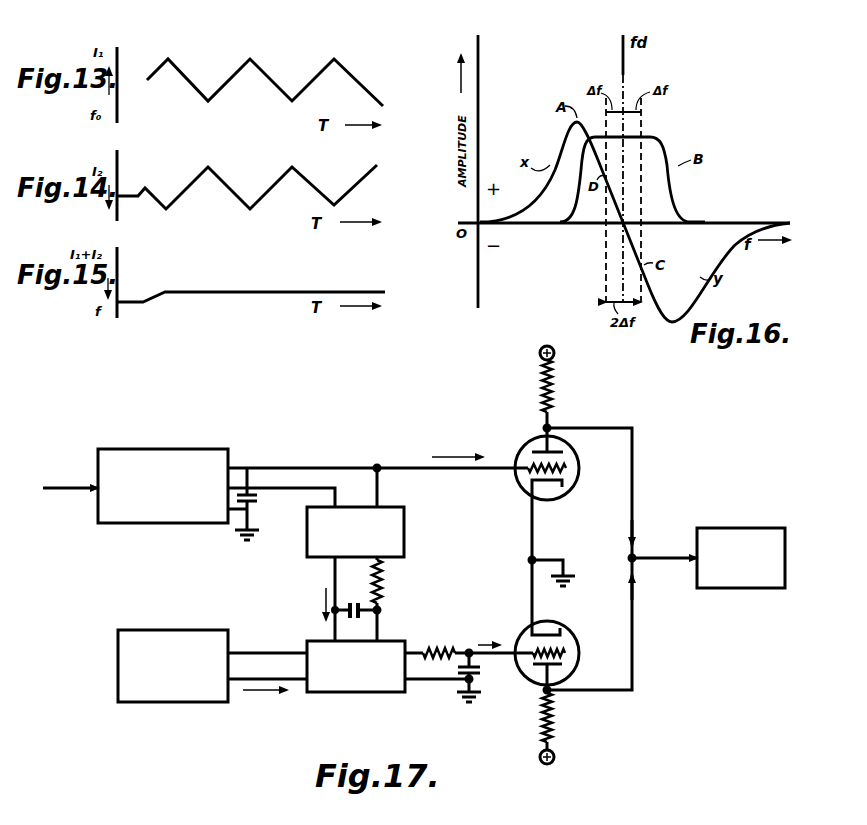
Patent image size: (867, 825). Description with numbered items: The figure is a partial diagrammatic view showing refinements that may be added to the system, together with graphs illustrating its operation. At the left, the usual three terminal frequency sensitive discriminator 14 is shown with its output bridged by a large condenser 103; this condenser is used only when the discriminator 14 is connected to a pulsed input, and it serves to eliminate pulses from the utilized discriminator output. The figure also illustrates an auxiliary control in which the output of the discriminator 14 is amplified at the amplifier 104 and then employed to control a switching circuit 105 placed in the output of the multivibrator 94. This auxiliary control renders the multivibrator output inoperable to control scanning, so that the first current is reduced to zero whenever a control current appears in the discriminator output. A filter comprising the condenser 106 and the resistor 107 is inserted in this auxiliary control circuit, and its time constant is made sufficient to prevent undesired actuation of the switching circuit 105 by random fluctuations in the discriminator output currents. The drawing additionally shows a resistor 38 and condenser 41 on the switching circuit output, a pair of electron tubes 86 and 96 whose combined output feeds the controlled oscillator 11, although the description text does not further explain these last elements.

The discriminator 14 is at (201, 449).
The condenser 103 is at (258, 502).
The amplifier 104 is at (404, 527).
The resistor 107 is at (383, 578).
The condenser 106 is at (360, 623).
The multivibrator 94 is at (197, 620).
The switching circuit 105 is at (352, 692).
The resistor 38 is at (440, 650).
The capacitor 41 is at (482, 676).
The electron tube 86 is at (518, 442).
The electron tube 96 is at (572, 636).
The controlled oscillator 11 is at (737, 528).